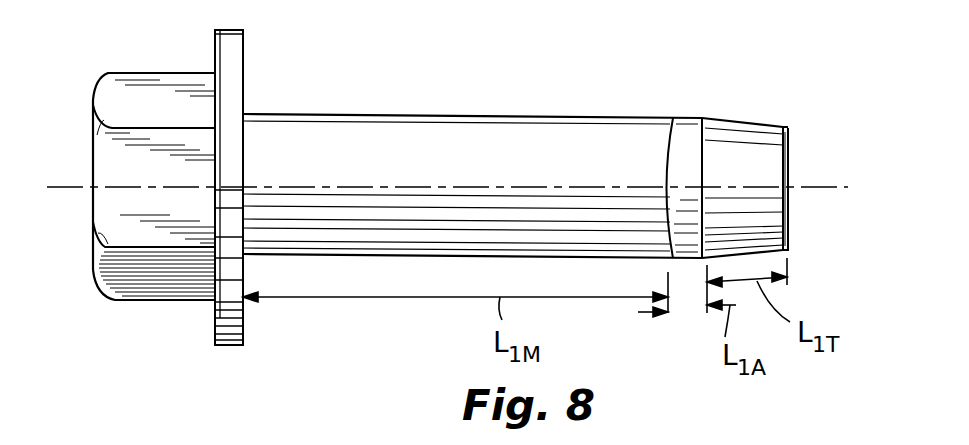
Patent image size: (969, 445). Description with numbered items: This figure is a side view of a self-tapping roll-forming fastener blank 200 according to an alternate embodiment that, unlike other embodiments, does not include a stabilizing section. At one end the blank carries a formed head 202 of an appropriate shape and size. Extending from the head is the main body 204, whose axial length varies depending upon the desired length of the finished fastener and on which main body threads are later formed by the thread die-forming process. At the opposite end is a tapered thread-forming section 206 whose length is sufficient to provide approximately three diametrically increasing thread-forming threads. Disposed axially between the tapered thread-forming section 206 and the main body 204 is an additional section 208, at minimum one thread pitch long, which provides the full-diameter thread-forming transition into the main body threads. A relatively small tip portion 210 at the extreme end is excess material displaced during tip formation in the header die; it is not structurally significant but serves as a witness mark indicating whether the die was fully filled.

The fastener blank 200 is at (489, 90).
The formed head 202 is at (157, 80).
The main body 204 is at (347, 118).
The tapered thread-forming section 206 is at (746, 122).
The additional section 208 is at (688, 118).
The tip portion 210 is at (790, 161).